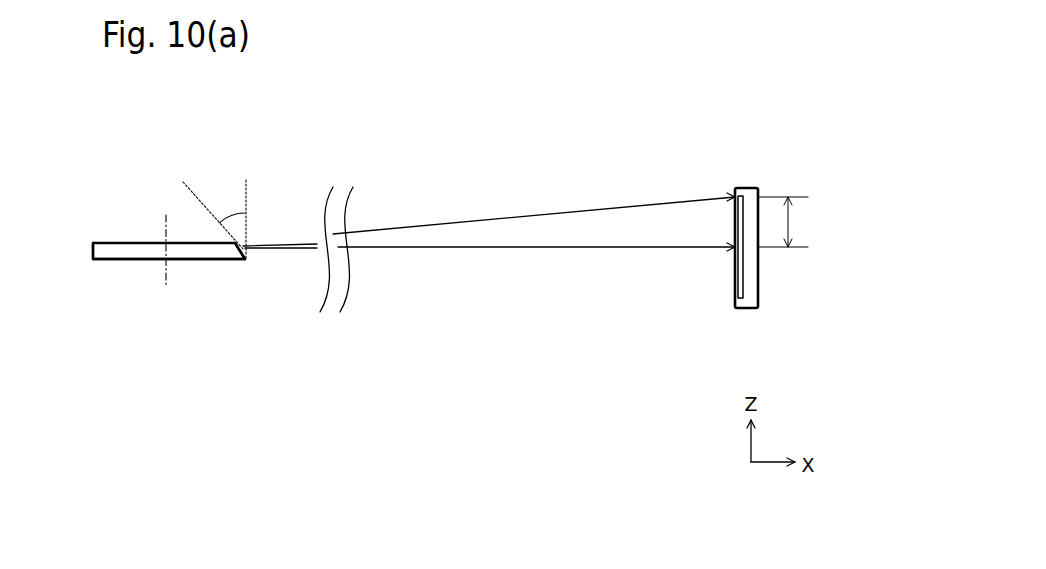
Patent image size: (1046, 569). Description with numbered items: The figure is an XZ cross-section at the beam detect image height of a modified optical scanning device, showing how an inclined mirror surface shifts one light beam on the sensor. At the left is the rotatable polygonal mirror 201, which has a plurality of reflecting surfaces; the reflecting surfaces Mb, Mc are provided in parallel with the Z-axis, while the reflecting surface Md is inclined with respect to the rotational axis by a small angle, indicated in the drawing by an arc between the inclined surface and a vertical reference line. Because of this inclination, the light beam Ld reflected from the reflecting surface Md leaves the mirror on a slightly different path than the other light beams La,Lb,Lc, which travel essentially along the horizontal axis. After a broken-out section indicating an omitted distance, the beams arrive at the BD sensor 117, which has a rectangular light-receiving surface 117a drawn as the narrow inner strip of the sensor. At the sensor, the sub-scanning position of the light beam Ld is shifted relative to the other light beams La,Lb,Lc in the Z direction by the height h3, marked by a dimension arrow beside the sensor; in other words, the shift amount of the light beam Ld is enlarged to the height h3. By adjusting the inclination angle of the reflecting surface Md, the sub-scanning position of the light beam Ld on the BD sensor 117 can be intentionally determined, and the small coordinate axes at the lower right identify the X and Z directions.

The rotatable polygonal mirror 201 is at (120, 242).
The reflecting surface Mb is at (93, 252).
The reflecting surface Mc is at (192, 255).
The reflecting surface Md is at (246, 247).
The light beam Ld is at (607, 208).
The light beams La,Lb,Lc is at (573, 249).
The BD sensor 117 is at (748, 188).
The light-receiving surface 117a is at (735, 278).
The height h3 is at (788, 218).